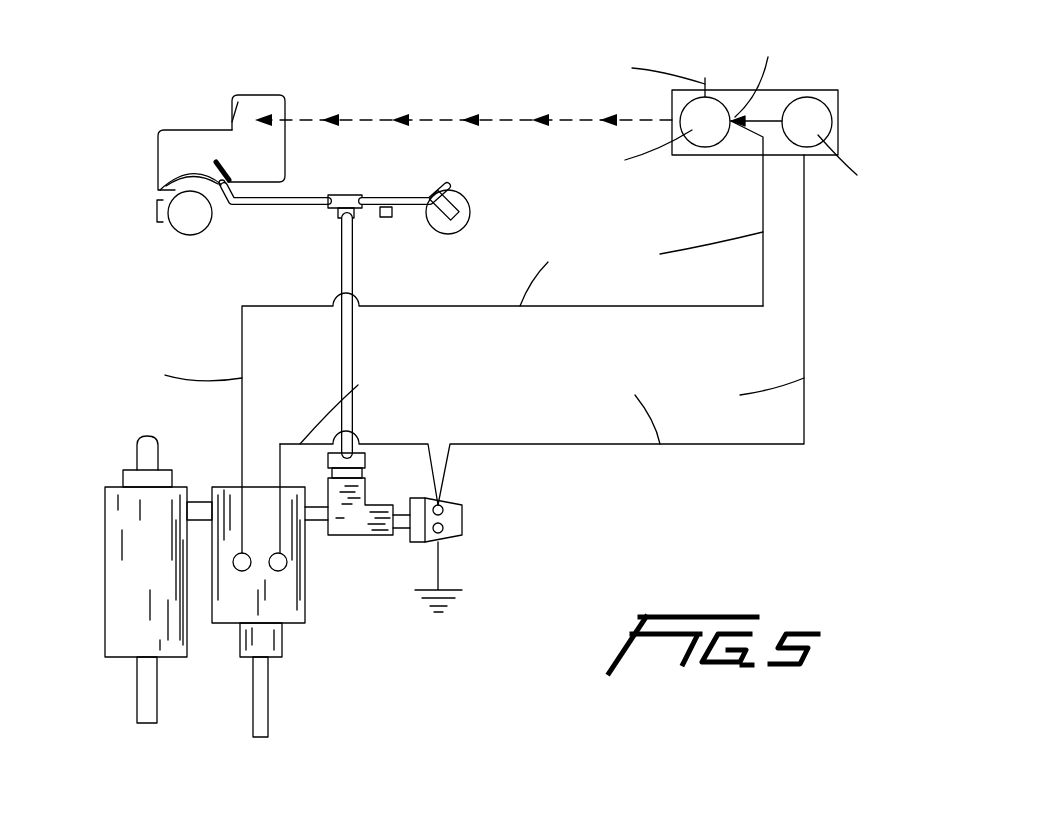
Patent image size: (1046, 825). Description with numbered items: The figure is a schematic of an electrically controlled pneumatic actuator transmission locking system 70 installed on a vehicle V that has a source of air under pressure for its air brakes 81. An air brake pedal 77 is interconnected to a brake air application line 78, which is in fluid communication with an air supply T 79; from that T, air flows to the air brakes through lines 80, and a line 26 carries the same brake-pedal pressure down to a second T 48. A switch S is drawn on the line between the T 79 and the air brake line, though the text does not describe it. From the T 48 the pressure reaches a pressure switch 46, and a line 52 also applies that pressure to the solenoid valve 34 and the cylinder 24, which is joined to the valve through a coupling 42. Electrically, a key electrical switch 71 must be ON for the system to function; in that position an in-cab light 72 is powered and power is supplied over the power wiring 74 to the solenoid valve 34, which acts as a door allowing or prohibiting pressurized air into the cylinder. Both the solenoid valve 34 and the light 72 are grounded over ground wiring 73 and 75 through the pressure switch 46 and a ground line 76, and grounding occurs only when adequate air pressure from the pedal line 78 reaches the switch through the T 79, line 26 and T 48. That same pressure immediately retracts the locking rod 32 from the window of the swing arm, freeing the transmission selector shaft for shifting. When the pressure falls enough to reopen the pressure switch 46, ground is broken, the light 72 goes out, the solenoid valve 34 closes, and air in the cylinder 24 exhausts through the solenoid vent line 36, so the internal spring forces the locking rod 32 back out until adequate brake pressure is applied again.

The cylinder 24 is at (120, 606).
The line 26 is at (353, 330).
The locking rod 32 is at (140, 440).
The solenoid valve 34 is at (295, 623).
The solenoid vent line 36 is at (253, 700).
The connector 42 is at (195, 505).
The pressure switch 46 is at (455, 508).
The T 48 is at (350, 527).
The line 52 is at (318, 504).
The electrically controlled pneumatic actuator transmission locking system 70 is at (143, 268).
The key electrical switch 71 is at (718, 143).
The in-cab light 72 is at (805, 92).
The ground wire 73 is at (804, 292).
The power wire 74 is at (242, 320).
The ground wire 75 is at (400, 442).
The ground line 76 is at (440, 563).
The air brake pedal 77 is at (218, 162).
The brake air application line 78 is at (265, 215).
The air supply T 79 is at (331, 216).
The lines 80 is at (425, 222).
The air brakes 81 is at (468, 200).
The vehicle V is at (258, 100).
The switch S is at (388, 208).